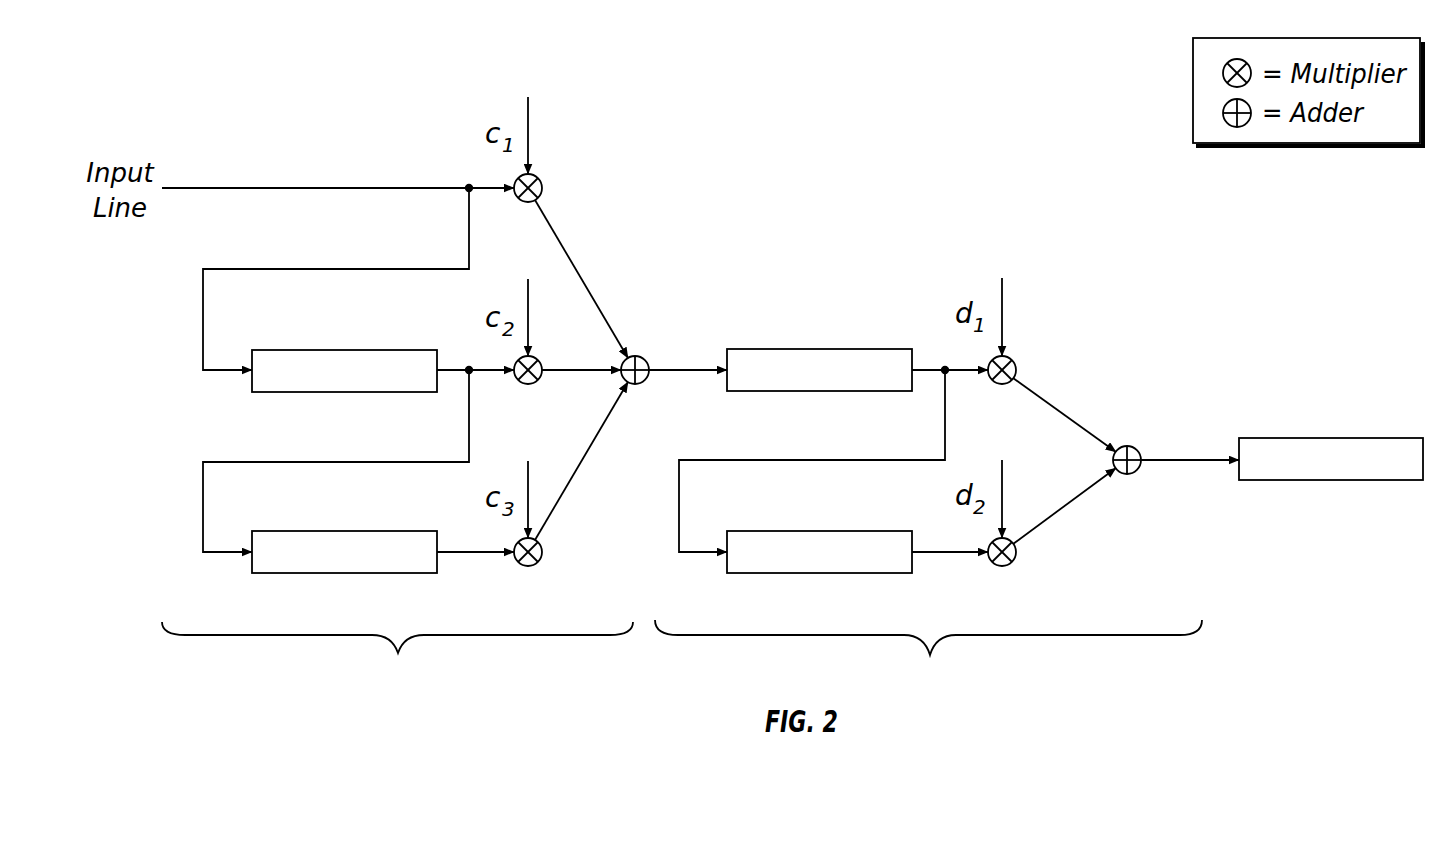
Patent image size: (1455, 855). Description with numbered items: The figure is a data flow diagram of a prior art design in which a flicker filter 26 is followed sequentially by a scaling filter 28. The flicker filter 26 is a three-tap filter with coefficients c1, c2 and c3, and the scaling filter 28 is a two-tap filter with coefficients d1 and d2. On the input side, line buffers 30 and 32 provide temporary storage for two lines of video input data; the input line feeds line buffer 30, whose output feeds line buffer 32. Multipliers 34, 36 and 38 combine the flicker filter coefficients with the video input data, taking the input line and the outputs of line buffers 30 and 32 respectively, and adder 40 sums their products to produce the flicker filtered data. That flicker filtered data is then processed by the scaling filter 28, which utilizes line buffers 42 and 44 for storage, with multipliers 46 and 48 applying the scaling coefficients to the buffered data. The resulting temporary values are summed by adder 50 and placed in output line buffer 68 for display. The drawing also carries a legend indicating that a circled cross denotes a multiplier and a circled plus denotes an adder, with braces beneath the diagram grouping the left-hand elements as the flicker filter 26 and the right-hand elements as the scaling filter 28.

The flicker filter 26 is at (397, 657).
The scaling filter 28 is at (928, 656).
The line buffer 30 is at (288, 348).
The line buffer 32 is at (288, 530).
The multiplier 34 is at (543, 187).
The multiplier 36 is at (528, 384).
The multiplier 38 is at (543, 551).
The adder 40 is at (648, 363).
The line buffer 42 is at (872, 348).
The line buffer 44 is at (872, 530).
The multiplier 46 is at (1016, 367).
The multiplier 48 is at (1002, 566).
The adder 50 is at (1141, 454).
The output line buffer 68 is at (1383, 438).